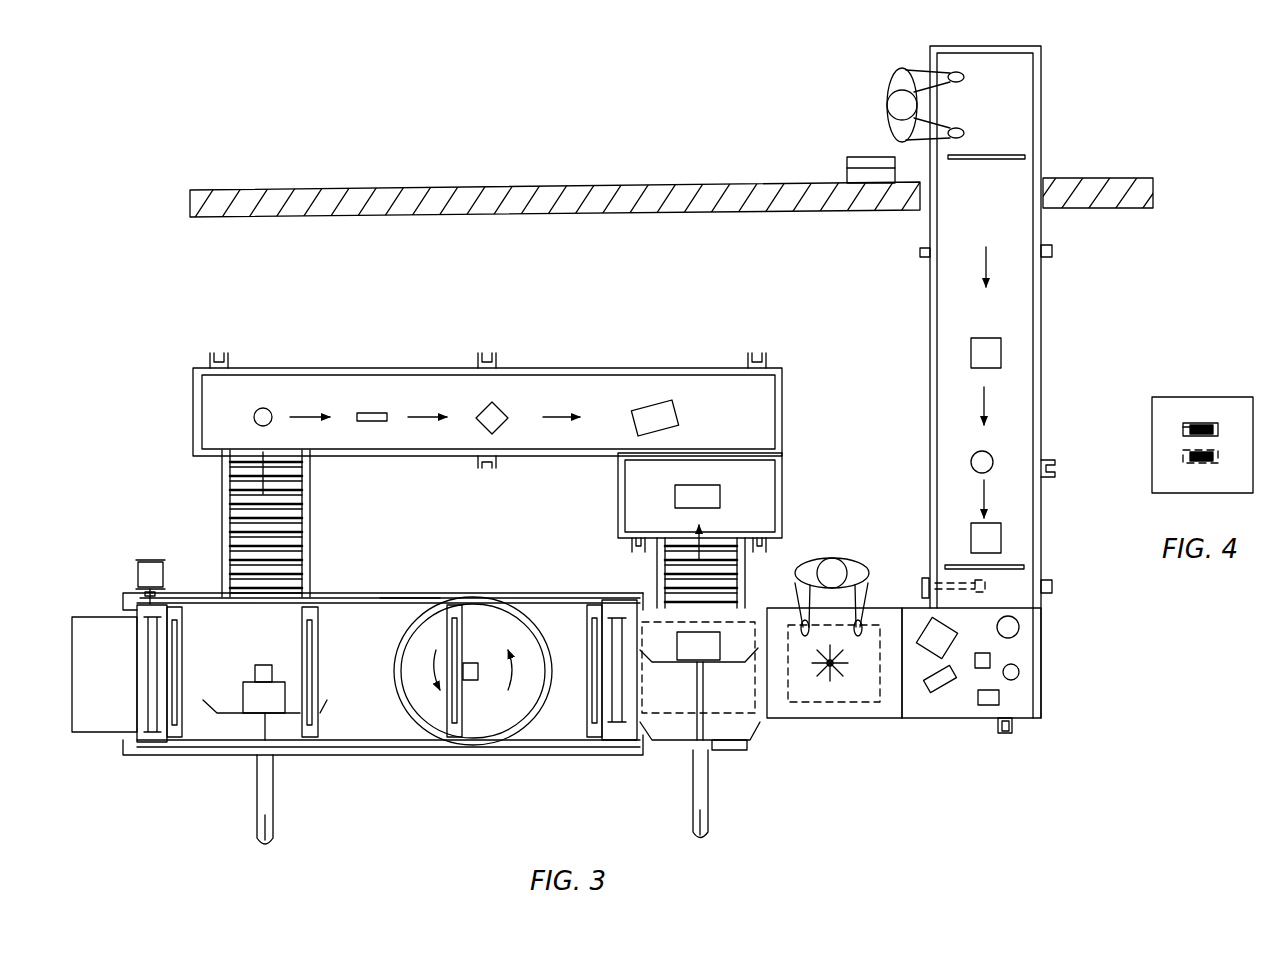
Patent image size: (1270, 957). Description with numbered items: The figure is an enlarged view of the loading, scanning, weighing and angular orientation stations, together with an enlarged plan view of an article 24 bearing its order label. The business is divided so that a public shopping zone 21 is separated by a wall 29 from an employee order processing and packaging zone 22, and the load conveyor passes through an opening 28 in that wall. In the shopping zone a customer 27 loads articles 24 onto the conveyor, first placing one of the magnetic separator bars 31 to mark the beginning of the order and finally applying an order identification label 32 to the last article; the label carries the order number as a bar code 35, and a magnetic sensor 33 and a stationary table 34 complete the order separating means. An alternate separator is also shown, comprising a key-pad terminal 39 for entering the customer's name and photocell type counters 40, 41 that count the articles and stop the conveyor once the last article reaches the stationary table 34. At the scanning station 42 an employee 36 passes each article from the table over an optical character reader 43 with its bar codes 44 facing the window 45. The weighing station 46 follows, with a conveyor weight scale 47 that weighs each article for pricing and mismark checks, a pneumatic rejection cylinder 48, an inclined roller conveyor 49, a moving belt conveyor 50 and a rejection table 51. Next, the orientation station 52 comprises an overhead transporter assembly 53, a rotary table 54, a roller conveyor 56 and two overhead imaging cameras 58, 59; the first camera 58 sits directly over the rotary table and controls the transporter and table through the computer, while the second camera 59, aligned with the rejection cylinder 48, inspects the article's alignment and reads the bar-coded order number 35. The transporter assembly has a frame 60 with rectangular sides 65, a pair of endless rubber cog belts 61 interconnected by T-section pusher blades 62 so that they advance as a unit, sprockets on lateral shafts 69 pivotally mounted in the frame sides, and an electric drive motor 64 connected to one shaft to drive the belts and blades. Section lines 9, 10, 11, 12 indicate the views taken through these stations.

In FIG. 3, the section line 9- 9 is at (830, 600).
In FIG. 3, the section line 10- 10 is at (660, 330).
In FIG. 3, the section line 11- 11 is at (522, 558).
In FIG. 3, the section line 12- 12 is at (225, 335).
In FIG. 3, the public shopping zone 21 is at (437, 116).
In FIG. 3, the employee order processing and packaging zone 22 is at (427, 276).
In FIG. 3, the articles 24 is at (500, 411).
In FIG. 4, the articles 24 is at (1200, 397).
In FIG. 3, the customer 27 is at (886, 100).
In FIG. 3, the opening 28 is at (922, 212).
In FIG. 3, the wall 29 is at (800, 210).
In FIG. 3, the magnetic separator bars 31 is at (968, 157).
In FIG. 4, the order identification labels 32 is at (1190, 423).
In FIG. 3, the magnetic sensor 33 is at (985, 592).
In FIG. 3, the stationary table 34 is at (1015, 708).
In FIG. 4, the bar code 35 is at (1183, 430).
In FIG. 3, the employee 36 is at (847, 588).
In FIG. 3, the key-pad terminal 39 is at (848, 157).
In FIG. 3, the photocell type counter 40 is at (1056, 258).
In FIG. 3, the photocell type counter 41 is at (1055, 594).
In FIG. 3, the scanning station 42 is at (874, 712).
In FIG. 3, the optical character reader 43 is at (858, 718).
In FIG. 4, the bar codes 44 is at (1212, 463).
In FIG. 3, the window 45 is at (830, 682).
In FIG. 3, the weighing station 46 is at (728, 712).
In FIG. 3, the conveyor weight scale 47 is at (665, 745).
In FIG. 3, the pneumatic rejection cylinder 48 is at (275, 812).
In FIG. 3, the inclined roller conveyor 49 is at (676, 590).
In FIG. 3, the moving belt conveyor 50 is at (400, 385).
In FIG. 3, the rejection table 51 is at (758, 502).
In FIG. 3, the orientation station 52 is at (398, 760).
In FIG. 3, the overhead transporter assembly 53 is at (432, 595).
In FIG. 3, the rotary table 54 is at (478, 620).
In FIG. 3, the roller conveyor 56 is at (280, 527).
In FIG. 3, the overhead imaging camera 58 is at (480, 680).
In FIG. 3, the overhead imaging camera 59 is at (259, 665).
In FIG. 3, the frame 60 is at (380, 595).
In FIG. 3, the endless rubber cog belts 61 is at (363, 628).
In FIG. 3, the T-section pusher blades 62 is at (182, 662).
In FIG. 3, the electric drive motor 64 is at (145, 560).
In FIG. 3, the rectangular sides 65 is at (495, 598).
In FIG. 3, the lateral shafts 69 is at (142, 666).